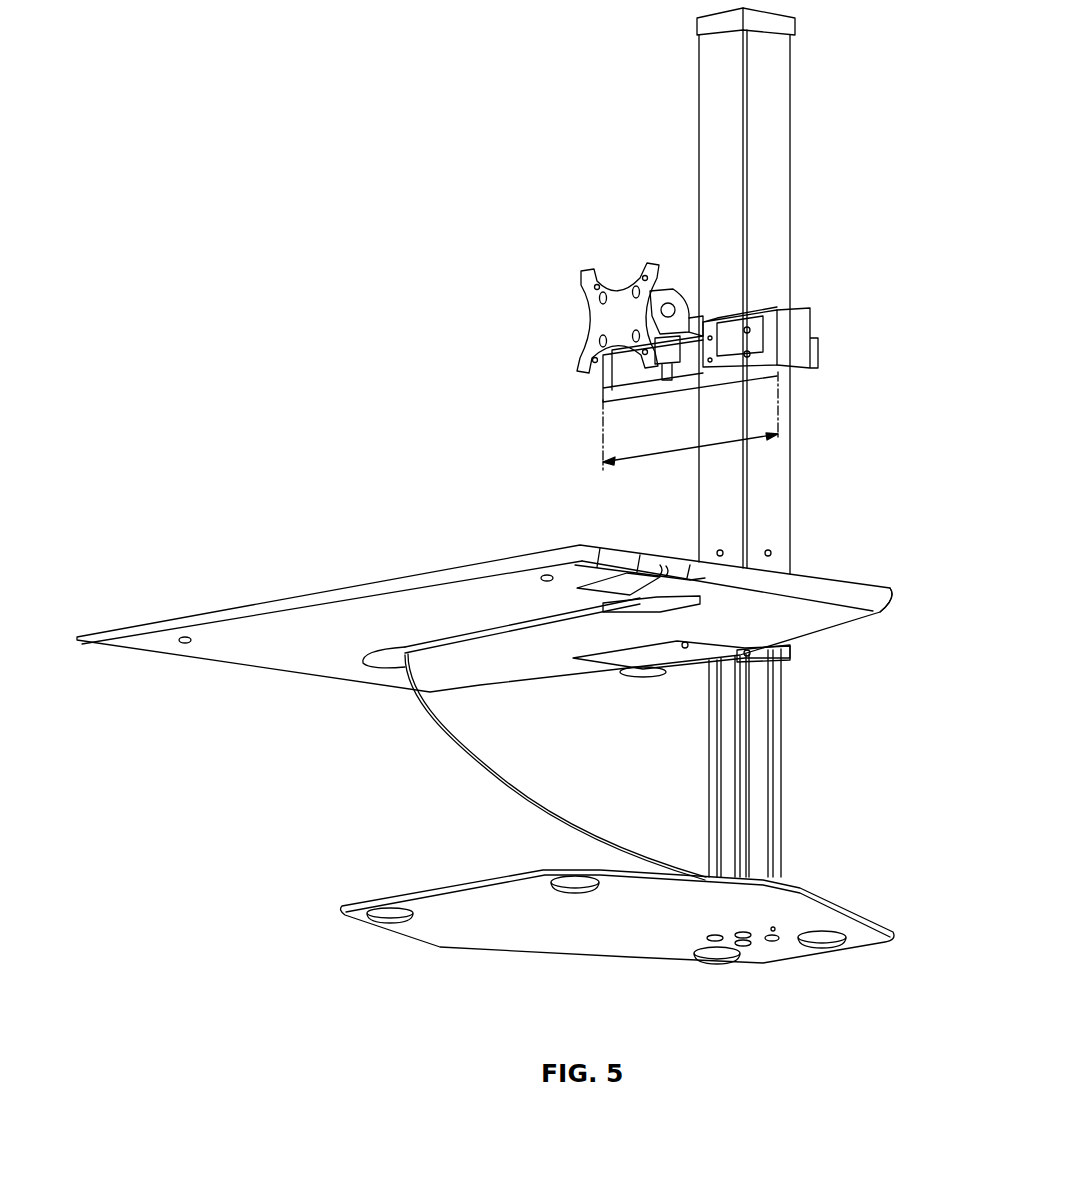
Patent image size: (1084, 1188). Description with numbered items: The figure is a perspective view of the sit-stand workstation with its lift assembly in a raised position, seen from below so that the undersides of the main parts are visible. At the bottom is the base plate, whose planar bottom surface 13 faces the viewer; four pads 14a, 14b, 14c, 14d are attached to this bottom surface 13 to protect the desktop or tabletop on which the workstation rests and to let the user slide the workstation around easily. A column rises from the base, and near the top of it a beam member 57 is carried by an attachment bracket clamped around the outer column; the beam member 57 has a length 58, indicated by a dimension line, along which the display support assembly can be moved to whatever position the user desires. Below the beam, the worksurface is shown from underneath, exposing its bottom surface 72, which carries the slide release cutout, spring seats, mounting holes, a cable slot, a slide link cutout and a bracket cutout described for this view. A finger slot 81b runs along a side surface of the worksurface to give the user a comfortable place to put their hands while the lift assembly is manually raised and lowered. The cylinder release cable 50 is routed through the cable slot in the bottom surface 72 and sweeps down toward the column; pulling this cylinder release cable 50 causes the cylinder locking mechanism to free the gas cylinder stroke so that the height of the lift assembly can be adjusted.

The bottom surface 13 is at (510, 920).
The pad 14a is at (387, 918).
The pad 14b is at (575, 890).
The pad 14c is at (717, 960).
The pad 14d is at (822, 944).
The cylinder release cable 50 is at (565, 812).
The beam member 57 is at (760, 330).
The length 58 is at (668, 455).
The bottom surface 72 is at (288, 645).
The finger slot 81b is at (841, 598).